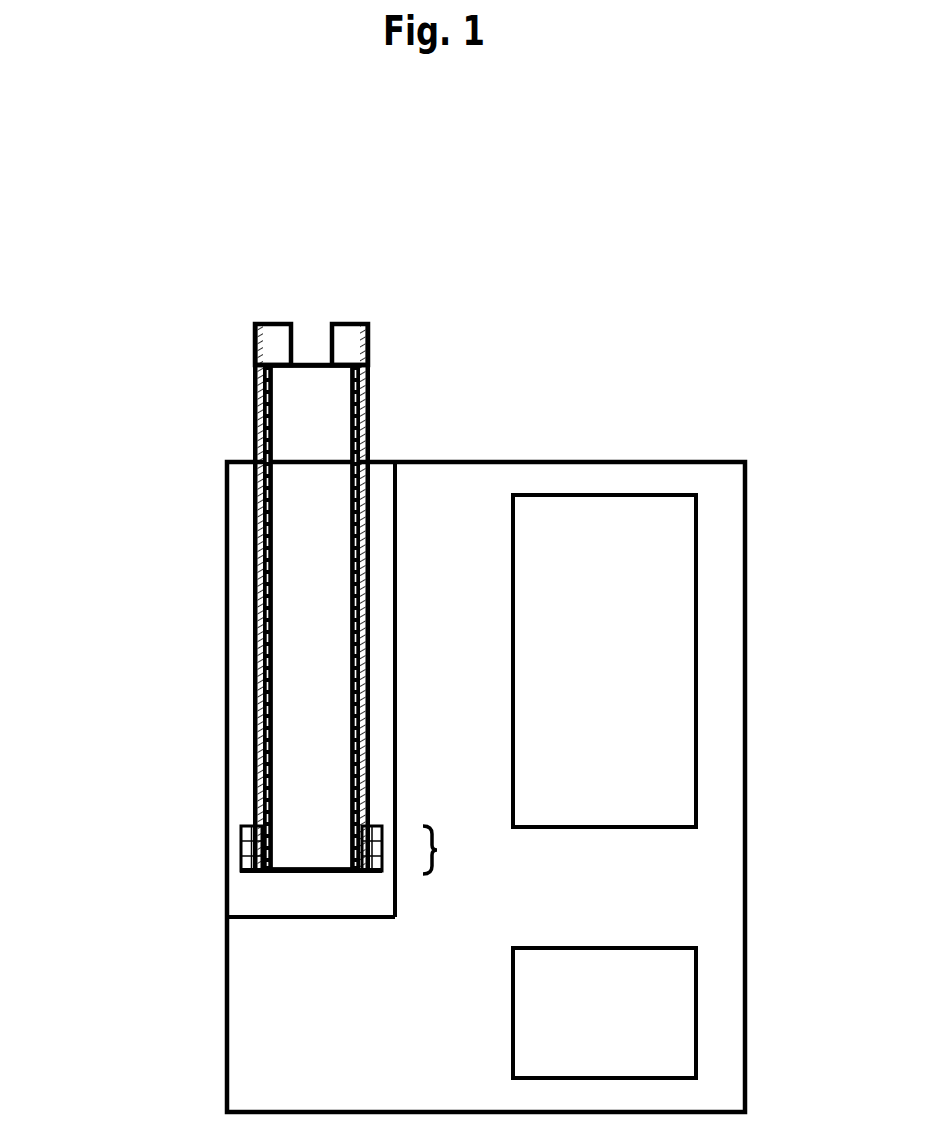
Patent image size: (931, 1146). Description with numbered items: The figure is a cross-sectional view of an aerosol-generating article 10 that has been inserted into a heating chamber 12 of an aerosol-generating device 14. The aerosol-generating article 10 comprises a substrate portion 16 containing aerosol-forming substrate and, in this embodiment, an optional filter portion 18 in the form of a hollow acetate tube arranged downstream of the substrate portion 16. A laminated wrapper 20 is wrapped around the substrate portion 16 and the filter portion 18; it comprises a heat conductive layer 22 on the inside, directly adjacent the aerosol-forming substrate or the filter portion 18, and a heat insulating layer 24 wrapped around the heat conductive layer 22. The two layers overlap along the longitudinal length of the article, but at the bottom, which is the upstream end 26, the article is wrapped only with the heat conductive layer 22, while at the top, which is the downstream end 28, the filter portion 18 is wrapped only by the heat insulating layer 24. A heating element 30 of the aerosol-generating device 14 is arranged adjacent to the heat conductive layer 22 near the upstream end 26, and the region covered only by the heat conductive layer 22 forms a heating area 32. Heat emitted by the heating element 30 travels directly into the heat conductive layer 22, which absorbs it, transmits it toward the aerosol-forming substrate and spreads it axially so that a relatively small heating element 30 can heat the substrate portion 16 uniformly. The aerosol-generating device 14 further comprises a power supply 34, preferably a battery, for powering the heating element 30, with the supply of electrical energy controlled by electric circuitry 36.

The aerosol-generating article 10 is at (295, 600).
The heating chamber 12 is at (280, 766).
The aerosol-generating device 14 is at (176, 978).
The substrate portion 16 is at (311, 617).
The filter portion 18 is at (272, 344).
The laminated wrapper 20 is at (255, 407).
The heat conductive layer 22 is at (265, 621).
The heat insulating layer 24 is at (258, 572).
The upstream end 26 is at (278, 886).
The downstream end 28 is at (366, 308).
The heating element 30 is at (373, 847).
The heating area 32 is at (455, 850).
The power supply 34 is at (683, 993).
The electric circuitry 36 is at (683, 620).